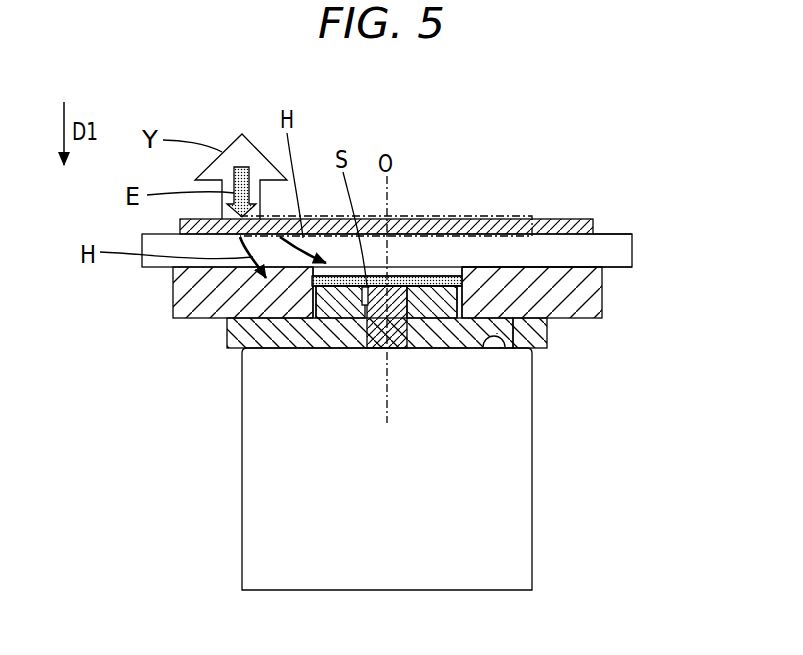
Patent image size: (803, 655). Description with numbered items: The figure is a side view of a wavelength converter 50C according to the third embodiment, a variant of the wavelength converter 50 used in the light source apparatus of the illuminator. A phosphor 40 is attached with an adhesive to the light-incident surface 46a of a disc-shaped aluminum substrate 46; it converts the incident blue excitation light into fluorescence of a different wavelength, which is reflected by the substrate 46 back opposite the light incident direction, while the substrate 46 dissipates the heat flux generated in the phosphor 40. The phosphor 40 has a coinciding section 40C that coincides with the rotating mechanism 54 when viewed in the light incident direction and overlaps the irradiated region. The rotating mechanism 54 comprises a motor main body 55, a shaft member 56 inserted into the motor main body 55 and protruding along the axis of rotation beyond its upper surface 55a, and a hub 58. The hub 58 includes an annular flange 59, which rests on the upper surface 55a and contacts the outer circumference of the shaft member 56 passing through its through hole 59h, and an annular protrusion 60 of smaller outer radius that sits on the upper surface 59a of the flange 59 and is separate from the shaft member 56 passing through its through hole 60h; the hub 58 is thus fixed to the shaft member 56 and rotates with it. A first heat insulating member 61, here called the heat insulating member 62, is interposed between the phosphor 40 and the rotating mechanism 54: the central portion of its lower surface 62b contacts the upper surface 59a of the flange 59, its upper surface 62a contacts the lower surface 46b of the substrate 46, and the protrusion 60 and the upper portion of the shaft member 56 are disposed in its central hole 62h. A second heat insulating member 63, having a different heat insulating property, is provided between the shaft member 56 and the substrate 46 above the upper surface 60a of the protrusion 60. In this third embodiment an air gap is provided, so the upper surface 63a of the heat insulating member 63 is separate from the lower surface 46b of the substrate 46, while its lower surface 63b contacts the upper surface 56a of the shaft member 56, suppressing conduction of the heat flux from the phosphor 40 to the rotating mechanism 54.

The phosphor 40 is at (579, 213).
The coinciding section 40C is at (514, 214).
The substrate 46 is at (633, 247).
The surface of the substrate 46a is at (620, 234).
The lower surface of the substrate 46b is at (619, 268).
The wavelength converter 50 is at (411, 370).
The wavelength converter 50C is at (411, 370).
The rotating mechanism 54 is at (437, 469).
The motor main body 55 is at (534, 470).
The upper surface of the motor main body 55a is at (497, 333).
The shaft member 56 is at (411, 332).
The upper surface of the shaft member 56a is at (358, 280).
The hub 58 is at (552, 337).
The flange 59 is at (224, 335).
The upper surface of the flange 59a is at (258, 310).
The through hole 59h is at (368, 295).
The protrusion 60 is at (360, 277).
The upper surface of the protrusion 60a is at (425, 285).
The through hole 60h is at (382, 294).
The heat insulating member 61 is at (528, 233).
The heat insulating member 62 is at (604, 302).
The upper surface of the heat insulating member 62a is at (556, 267).
The lower surface of the heat insulating member 62b is at (517, 345).
The hole 62h is at (317, 295).
The heat insulating member 63 is at (449, 277).
The upper surface of the heat insulating member 63a is at (402, 277).
The lower surface of the heat insulating member 63b is at (437, 287).